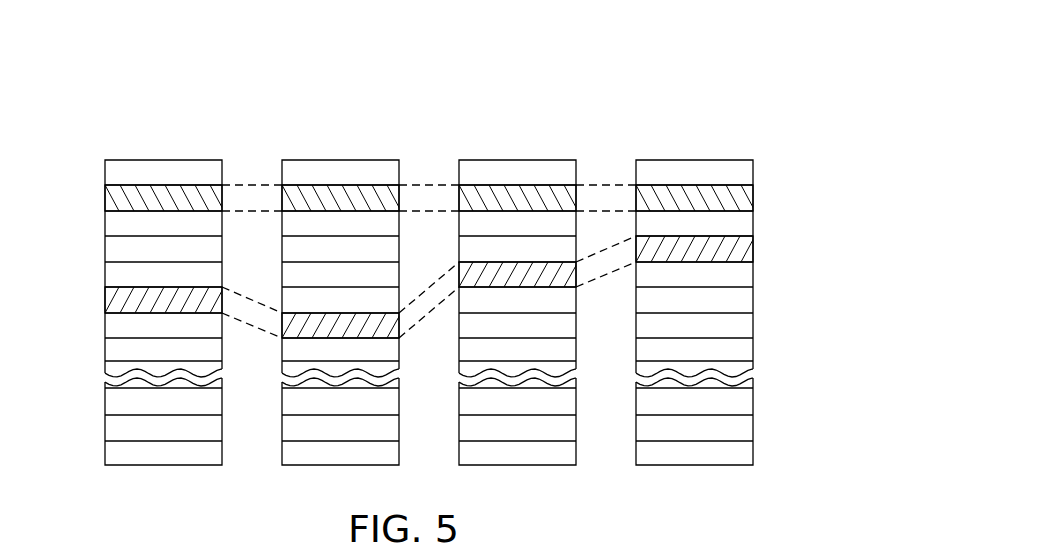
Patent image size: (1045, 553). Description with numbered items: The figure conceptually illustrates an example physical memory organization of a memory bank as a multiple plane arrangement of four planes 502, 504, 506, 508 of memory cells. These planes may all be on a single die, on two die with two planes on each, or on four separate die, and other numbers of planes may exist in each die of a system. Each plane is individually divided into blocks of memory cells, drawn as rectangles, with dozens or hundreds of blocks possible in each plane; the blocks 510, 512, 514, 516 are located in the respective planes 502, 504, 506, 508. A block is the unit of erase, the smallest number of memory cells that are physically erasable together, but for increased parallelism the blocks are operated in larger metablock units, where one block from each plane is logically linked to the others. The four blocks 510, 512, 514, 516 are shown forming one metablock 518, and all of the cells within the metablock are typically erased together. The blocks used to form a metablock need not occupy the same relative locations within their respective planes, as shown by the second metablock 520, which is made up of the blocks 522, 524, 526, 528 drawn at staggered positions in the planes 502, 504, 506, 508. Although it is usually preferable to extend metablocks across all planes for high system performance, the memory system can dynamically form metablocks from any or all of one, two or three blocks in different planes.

The plane 502 is at (135, 282).
The plane 504 is at (325, 282).
The plane 506 is at (488, 282).
The plane 508 is at (730, 237).
The block 510 is at (133, 195).
The block 512 is at (320, 195).
The block 514 is at (500, 195).
The block 516 is at (723, 195).
The metablock 518 is at (465, 155).
The second metablock 520 is at (429, 218).
The block 522 is at (125, 300).
The block 524 is at (315, 325).
The block 526 is at (505, 270).
The block 528 is at (730, 248).